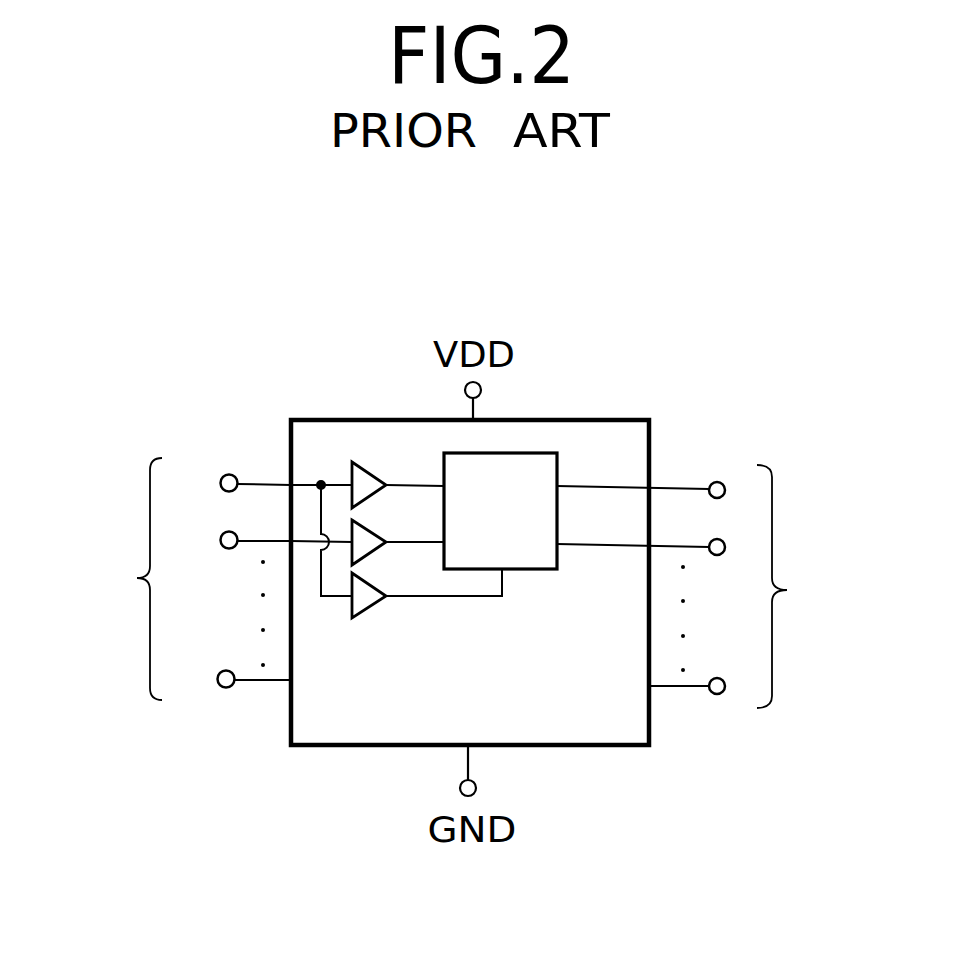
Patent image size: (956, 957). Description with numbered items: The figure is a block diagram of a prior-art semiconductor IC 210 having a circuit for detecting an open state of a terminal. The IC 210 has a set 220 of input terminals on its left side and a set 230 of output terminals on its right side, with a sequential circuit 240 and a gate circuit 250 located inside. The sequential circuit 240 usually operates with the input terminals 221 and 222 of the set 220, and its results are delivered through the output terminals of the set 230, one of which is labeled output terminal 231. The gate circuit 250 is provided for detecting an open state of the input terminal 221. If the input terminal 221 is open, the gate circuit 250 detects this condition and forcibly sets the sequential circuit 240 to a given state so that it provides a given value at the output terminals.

The IC 210 is at (368, 746).
The set of input terminals 220 is at (172, 556).
The input terminal 221 is at (222, 478).
The input terminal 222 is at (222, 546).
The set of output terminals 230 is at (773, 555).
The output terminal 231 is at (714, 481).
The sequential circuit 240 is at (543, 570).
The gate circuit 250 is at (368, 607).